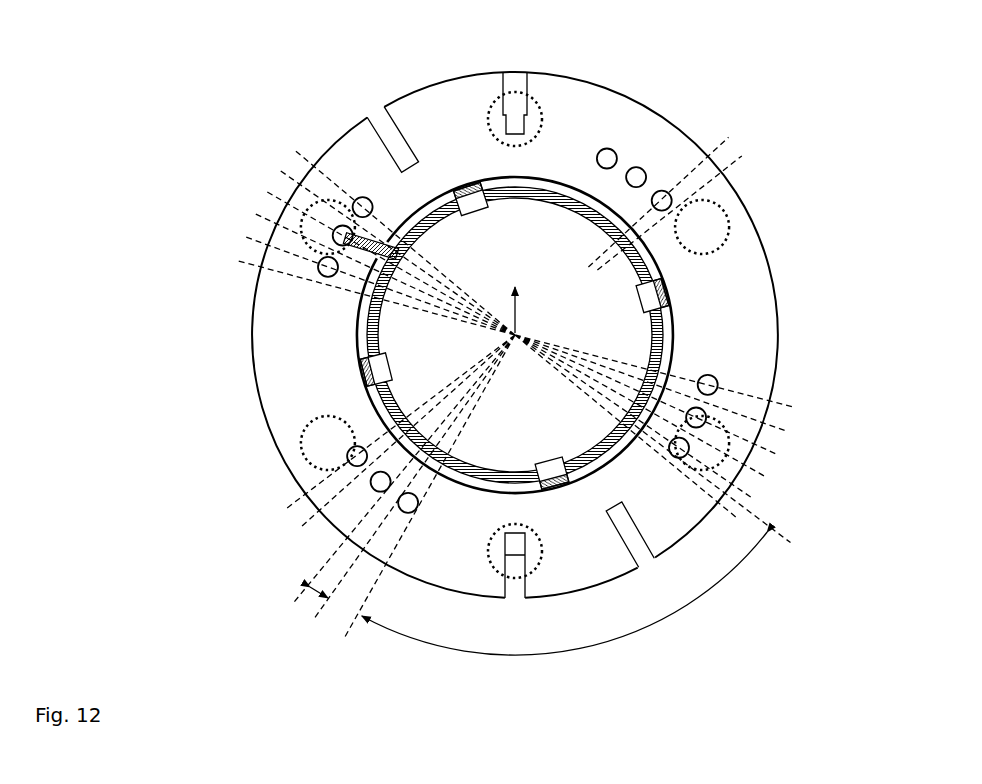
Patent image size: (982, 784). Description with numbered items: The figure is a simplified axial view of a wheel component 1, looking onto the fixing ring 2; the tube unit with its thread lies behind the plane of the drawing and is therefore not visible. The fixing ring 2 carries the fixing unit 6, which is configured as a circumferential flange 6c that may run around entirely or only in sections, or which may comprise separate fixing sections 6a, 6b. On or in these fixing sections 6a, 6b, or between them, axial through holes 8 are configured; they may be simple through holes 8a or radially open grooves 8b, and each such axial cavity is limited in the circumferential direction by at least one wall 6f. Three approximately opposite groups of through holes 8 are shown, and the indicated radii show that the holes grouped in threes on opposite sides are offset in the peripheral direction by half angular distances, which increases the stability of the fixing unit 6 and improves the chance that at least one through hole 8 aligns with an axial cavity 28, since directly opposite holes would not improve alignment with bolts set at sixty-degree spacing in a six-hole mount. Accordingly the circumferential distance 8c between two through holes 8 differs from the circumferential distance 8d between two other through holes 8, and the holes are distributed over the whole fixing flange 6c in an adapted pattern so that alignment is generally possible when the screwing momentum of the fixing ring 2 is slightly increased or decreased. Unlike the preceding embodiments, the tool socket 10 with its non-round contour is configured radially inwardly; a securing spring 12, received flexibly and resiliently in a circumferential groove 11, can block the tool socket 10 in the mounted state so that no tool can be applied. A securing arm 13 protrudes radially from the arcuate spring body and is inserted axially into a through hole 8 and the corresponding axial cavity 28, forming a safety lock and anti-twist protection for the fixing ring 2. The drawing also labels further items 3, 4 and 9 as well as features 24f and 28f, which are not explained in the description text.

The wheel component 1 is at (222, 97).
The fixing ring 2 is at (693, 137).
The rotary ring 3 is at (358, 332).
The axis of rotation 4 is at (507, 300).
The fixing unit 6 is at (627, 110).
The fixing section 6a is at (463, 88).
The fixing section 6b is at (578, 572).
The circumferential flange 6c is at (755, 303).
The wall 6f is at (403, 155).
The axial through holes 8 is at (661, 191).
The through holes 8a is at (408, 508).
The radially open grooves 8b is at (527, 82).
The circumferential distance 8c is at (318, 602).
The circumferential distance 8d is at (588, 652).
The viewing direction 9 is at (848, 162).
The tool socket 10 is at (541, 456).
The circumferential groove 11 is at (388, 366).
The securing spring 12 is at (515, 195).
The securing arm 13 is at (382, 247).
The recess 24f is at (542, 117).
The axial cavity 28 is at (513, 92).
The pin receptacle 28f is at (488, 118).